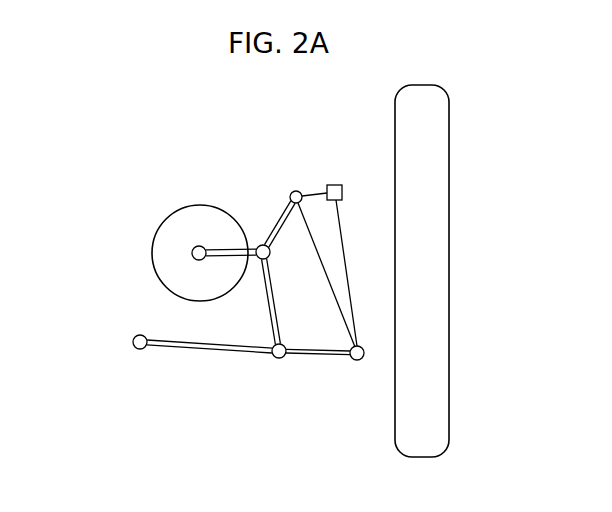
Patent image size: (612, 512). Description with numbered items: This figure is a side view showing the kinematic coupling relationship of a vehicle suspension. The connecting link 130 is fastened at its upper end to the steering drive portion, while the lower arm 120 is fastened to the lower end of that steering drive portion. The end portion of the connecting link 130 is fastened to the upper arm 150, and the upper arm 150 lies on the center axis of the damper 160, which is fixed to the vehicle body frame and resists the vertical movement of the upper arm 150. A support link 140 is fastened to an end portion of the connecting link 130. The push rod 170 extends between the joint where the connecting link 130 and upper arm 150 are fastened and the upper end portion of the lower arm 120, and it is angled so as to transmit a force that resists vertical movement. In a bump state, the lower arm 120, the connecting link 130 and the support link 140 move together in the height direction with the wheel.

The lower arm 120 is at (203, 352).
The connecting link 130 is at (278, 212).
The support link 140 is at (318, 188).
The upper arm 150 is at (233, 247).
The damper 160 is at (186, 207).
The push rod 170 is at (270, 322).